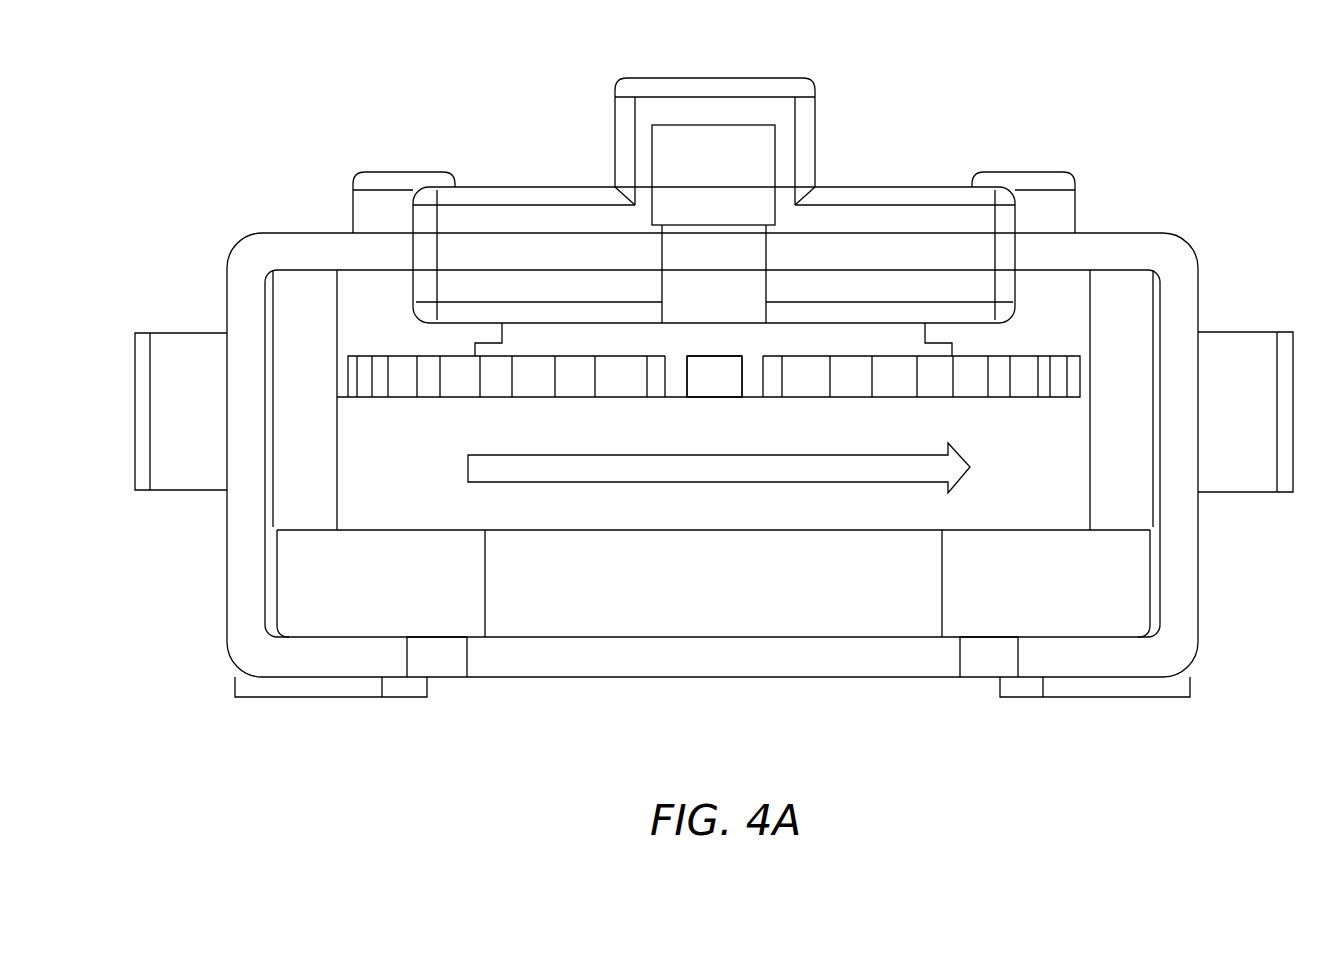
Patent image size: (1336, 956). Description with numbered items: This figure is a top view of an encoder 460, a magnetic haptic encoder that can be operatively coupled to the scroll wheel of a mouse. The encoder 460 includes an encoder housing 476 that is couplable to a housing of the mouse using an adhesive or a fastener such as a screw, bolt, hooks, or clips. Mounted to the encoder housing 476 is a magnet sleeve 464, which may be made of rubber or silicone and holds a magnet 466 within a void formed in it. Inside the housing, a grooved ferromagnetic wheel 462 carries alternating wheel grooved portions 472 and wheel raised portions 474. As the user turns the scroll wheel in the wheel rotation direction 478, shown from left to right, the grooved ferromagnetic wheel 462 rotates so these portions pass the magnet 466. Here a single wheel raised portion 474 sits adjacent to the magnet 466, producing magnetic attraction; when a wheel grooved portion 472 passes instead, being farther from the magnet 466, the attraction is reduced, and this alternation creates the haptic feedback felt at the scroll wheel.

The encoder 460 is at (707, 401).
The grooved ferromagnetic wheel 462 is at (345, 355).
The magnet sleeve 464 is at (948, 213).
The magnet 466 is at (757, 157).
The wheel grooved portion 472 is at (677, 382).
The wheel raised portion 474 is at (715, 380).
The encoder housing 476 is at (240, 548).
The wheel rotation direction 478 is at (495, 483).